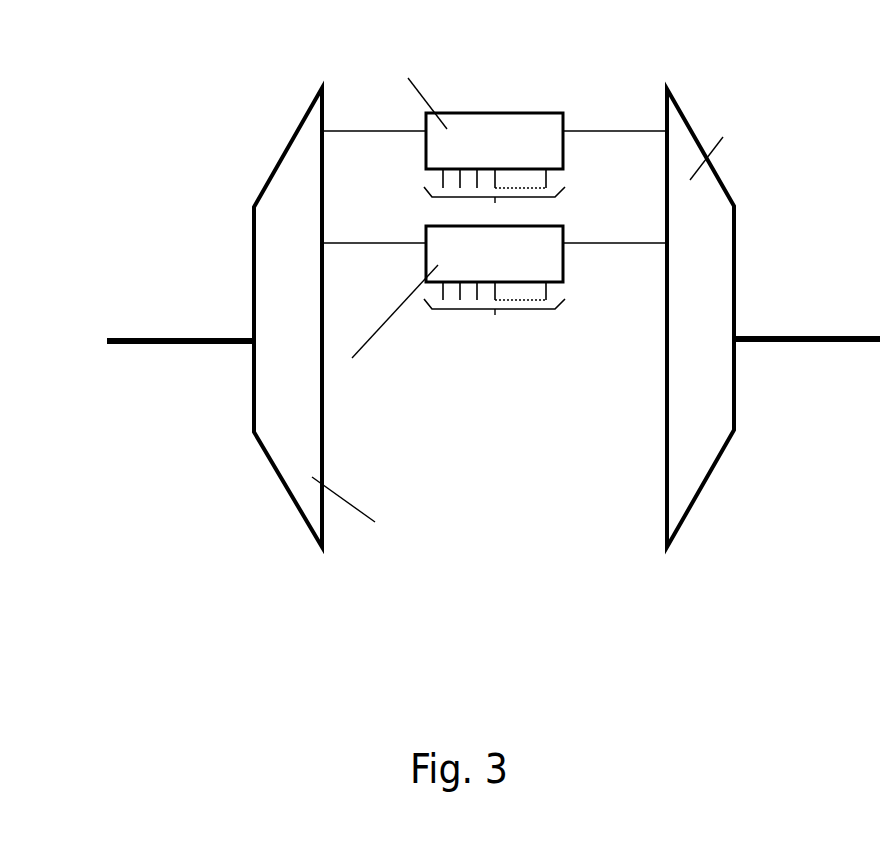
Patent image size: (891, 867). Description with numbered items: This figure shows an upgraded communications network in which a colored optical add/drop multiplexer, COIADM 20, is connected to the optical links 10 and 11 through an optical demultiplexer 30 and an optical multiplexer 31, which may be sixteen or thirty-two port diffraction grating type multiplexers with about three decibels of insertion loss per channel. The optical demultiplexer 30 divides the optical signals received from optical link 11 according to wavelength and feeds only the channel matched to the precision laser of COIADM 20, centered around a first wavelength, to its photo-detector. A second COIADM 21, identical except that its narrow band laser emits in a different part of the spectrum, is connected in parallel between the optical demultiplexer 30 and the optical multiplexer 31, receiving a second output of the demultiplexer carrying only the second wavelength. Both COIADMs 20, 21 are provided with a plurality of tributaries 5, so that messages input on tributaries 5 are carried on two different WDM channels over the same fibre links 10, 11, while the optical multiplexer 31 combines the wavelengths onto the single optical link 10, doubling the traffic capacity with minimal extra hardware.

The tributaries 5 is at (494, 251).
The optical link 10 is at (179, 334).
The optical link 11 is at (818, 333).
The COIADM 20 is at (480, 151).
The second COIADM 21 is at (480, 260).
The optical demultiplexer 30 is at (678, 328).
The optical multiplexer 31 is at (268, 326).